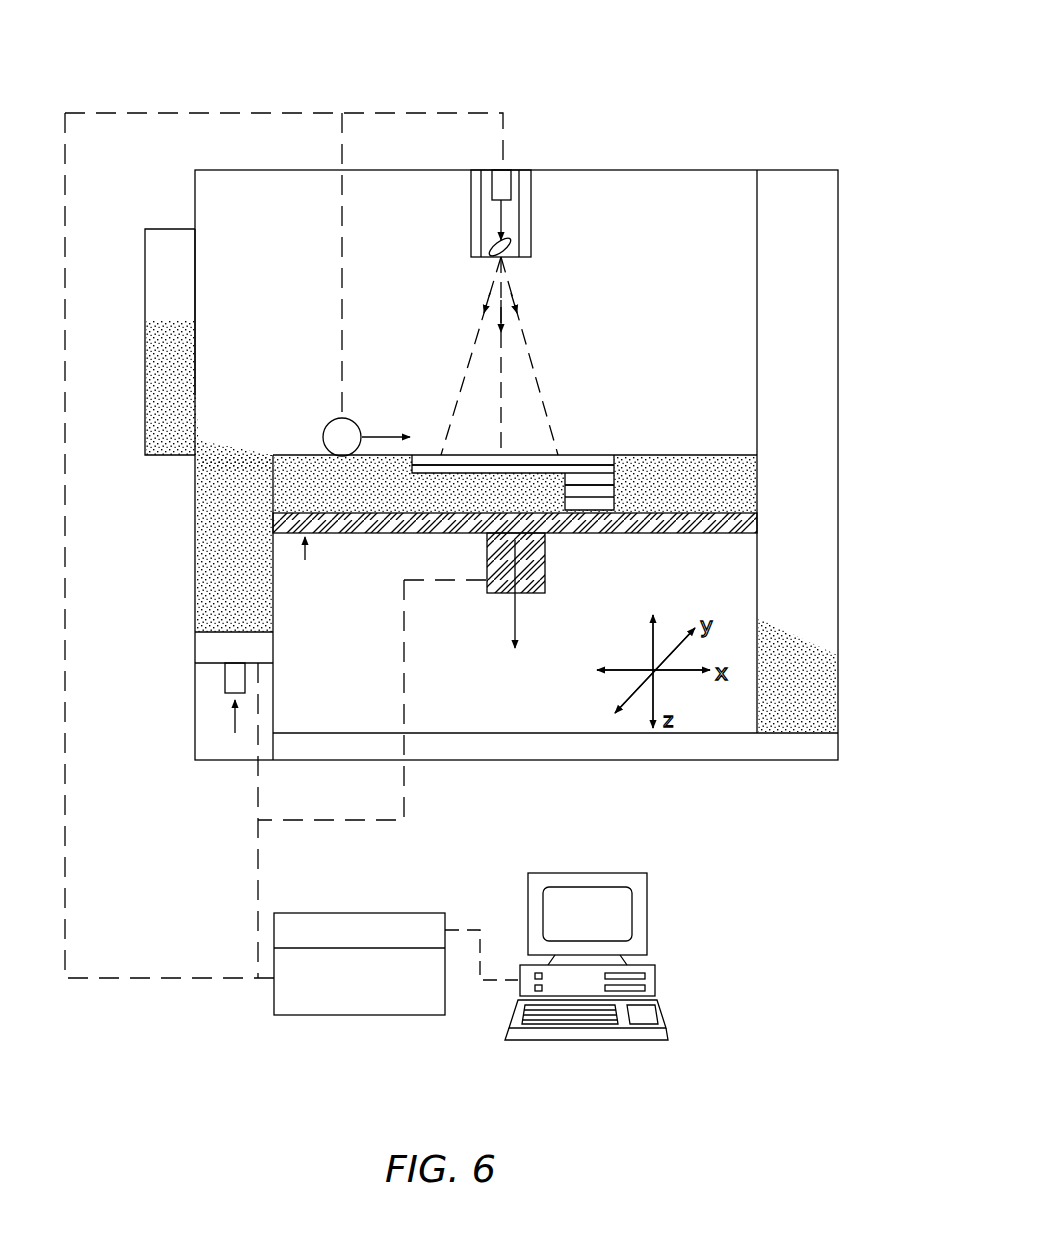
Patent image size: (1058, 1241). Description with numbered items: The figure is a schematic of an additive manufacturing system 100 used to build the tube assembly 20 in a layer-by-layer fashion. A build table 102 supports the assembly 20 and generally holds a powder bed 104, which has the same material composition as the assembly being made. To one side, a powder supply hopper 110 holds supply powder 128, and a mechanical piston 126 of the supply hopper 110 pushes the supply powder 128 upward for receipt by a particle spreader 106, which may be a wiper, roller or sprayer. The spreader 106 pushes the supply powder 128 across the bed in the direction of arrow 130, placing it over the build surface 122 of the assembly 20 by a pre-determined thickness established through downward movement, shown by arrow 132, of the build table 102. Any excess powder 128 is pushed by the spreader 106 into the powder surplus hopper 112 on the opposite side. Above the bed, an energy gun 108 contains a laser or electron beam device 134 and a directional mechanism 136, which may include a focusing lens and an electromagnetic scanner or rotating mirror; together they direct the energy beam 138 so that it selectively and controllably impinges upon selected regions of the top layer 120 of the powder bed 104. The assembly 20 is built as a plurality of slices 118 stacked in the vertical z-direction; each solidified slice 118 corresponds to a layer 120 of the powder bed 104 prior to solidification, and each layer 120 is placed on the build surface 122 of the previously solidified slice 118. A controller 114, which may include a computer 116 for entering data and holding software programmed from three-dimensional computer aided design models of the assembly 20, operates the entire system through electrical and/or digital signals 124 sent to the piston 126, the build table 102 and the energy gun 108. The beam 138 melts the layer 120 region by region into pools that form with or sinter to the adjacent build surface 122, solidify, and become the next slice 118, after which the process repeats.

The additive manufacturing system 100 is at (751, 82).
The build table 102 is at (627, 538).
The powder bed 104 is at (690, 465).
The particle spreader 106 is at (330, 420).
The energy gun 108 is at (540, 205).
The powder supply hopper 110 is at (180, 288).
The powder surplus hopper 112 is at (820, 605).
The controller 114 is at (250, 1021).
The computer 116 is at (650, 892).
The slice 118 is at (605, 458).
The layer 120 is at (720, 455).
The build surface 122 is at (522, 460).
The signal 124 is at (245, 112).
The mechanical piston 126 is at (210, 646).
The supply powder 128 is at (200, 423).
The arrow 130 is at (370, 436).
The arrow 132 is at (520, 613).
The laser or electron beam device 134 is at (505, 163).
The directional mechanism 136 is at (520, 242).
The energy beam 138 is at (490, 283).
The tube assembly 20 is at (578, 470).